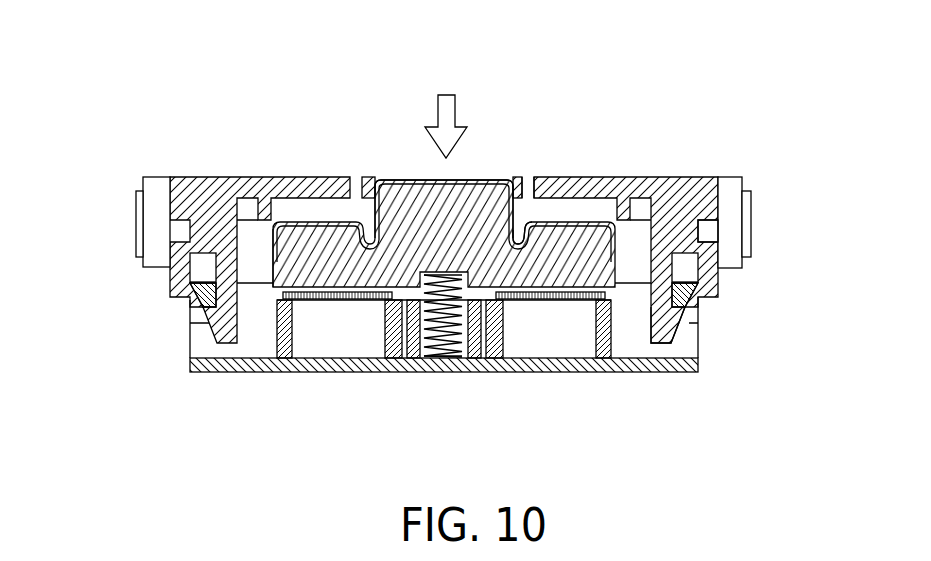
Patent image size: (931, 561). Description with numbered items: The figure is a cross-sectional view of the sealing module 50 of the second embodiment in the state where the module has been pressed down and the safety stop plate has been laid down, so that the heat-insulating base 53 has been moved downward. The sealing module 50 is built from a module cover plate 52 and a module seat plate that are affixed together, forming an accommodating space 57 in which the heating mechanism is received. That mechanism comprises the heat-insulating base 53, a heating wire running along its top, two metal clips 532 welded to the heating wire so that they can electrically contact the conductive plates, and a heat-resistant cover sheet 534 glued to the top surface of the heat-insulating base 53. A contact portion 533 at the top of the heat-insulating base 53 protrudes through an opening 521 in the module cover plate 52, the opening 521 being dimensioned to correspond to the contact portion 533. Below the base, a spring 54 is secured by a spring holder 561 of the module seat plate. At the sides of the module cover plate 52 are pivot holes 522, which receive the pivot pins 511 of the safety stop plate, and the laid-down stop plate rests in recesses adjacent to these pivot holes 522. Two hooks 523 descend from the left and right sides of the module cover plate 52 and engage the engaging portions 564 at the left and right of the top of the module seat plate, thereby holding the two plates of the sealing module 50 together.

The sealing module 50 is at (158, 84).
The module cover plate 52 is at (688, 178).
The opening 521 is at (527, 178).
The pivot holes 522 is at (722, 207).
The pivot pins 511 is at (710, 229).
The hooks 523 is at (675, 326).
The engaging portions 564 is at (703, 303).
The heat-insulating base 53 is at (315, 235).
The metal clips 532 is at (273, 292).
The contact portion 533 is at (437, 178).
The heat-resistant cover sheet 534 is at (498, 178).
The spring 54 is at (437, 338).
The spring holder 561 is at (418, 332).
The accommodating space 57 is at (260, 332).